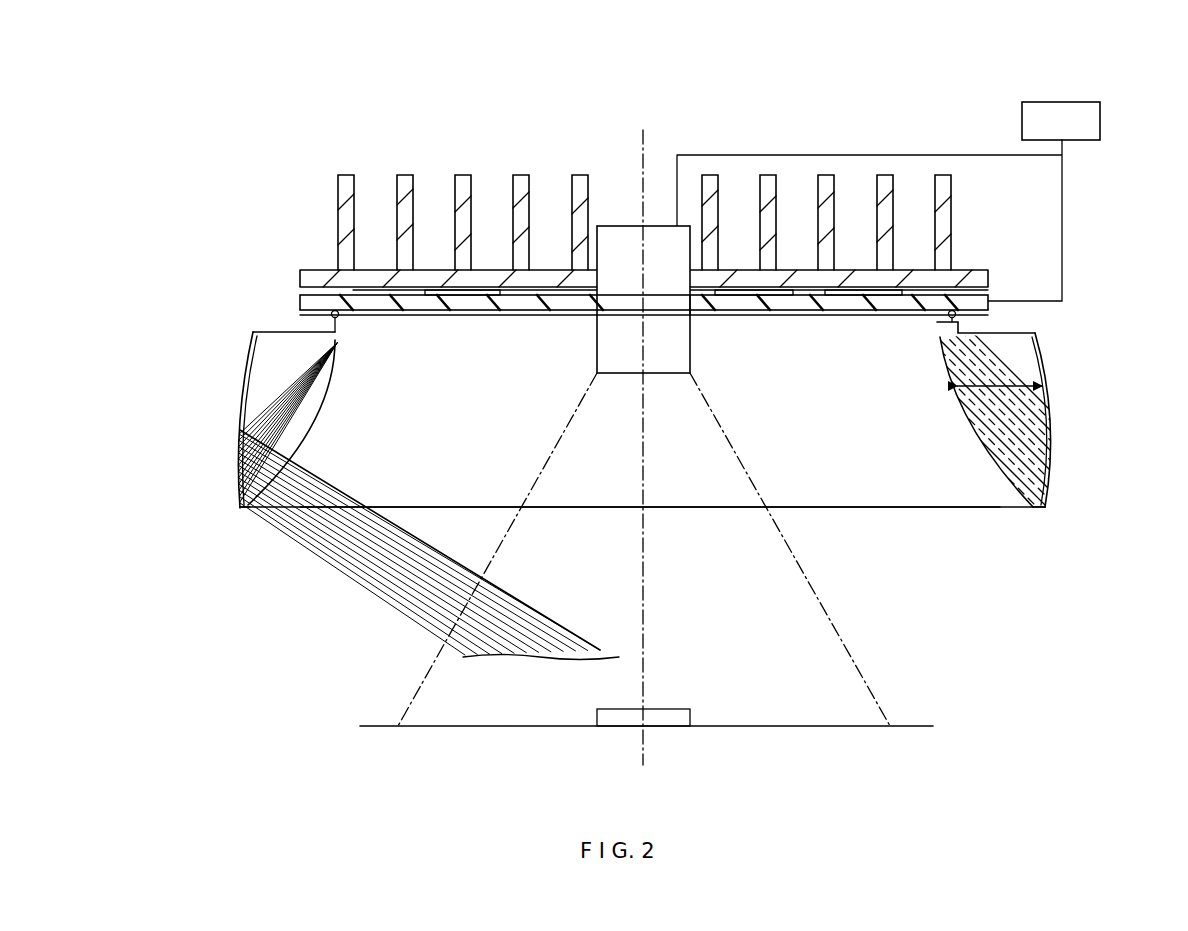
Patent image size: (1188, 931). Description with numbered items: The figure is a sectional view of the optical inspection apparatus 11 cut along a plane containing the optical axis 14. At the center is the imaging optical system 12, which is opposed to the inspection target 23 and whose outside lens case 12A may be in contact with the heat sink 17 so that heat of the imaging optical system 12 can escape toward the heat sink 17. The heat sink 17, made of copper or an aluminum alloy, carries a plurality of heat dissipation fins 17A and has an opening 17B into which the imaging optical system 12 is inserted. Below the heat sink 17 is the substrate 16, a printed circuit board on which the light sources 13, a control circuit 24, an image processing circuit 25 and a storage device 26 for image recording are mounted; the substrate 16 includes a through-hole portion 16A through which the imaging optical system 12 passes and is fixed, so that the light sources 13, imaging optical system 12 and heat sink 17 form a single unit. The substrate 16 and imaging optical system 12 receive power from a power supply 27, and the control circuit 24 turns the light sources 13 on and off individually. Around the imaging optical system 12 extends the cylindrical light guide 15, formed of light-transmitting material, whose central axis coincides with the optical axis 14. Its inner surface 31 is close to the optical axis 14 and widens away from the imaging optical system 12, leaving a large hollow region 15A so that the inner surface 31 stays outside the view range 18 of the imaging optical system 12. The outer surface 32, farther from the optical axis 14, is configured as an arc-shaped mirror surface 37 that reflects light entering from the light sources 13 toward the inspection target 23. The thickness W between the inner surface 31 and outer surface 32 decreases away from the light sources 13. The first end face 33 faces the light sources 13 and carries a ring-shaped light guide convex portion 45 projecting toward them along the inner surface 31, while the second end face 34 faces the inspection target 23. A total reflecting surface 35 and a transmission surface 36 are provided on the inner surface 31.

The optical inspection apparatus 11 is at (736, 70).
The imaging optical system 12 is at (620, 226).
The outside lens case 12A is at (653, 226).
The light sources 13 is at (331, 314).
The optical axis 14 is at (645, 530).
The light guide 15 is at (1062, 412).
The hollow region 15A is at (942, 470).
The substrate 16 is at (988, 292).
The through-hole portion 16A is at (700, 315).
The heat sink 17 is at (280, 158).
The heat dissipation fins 17A is at (460, 175).
The opening 17B is at (578, 273).
The view range 18 is at (750, 478).
The inspection target 23 is at (664, 709).
The control circuit 24 is at (468, 297).
The image processing circuit 25 is at (770, 297).
The storage device 26 is at (850, 297).
The power supply 27 is at (1022, 121).
The inner surface 31 is at (960, 428).
The outer surface 32 is at (1065, 435).
The first end face 33 is at (253, 332).
The second end face 34 is at (250, 510).
The total reflecting surface 35 is at (365, 325).
The transmission surface 36 is at (313, 455).
The mirror surface 37 is at (240, 414).
The light guide convex portion 45 is at (362, 323).
The thickness W is at (1000, 383).